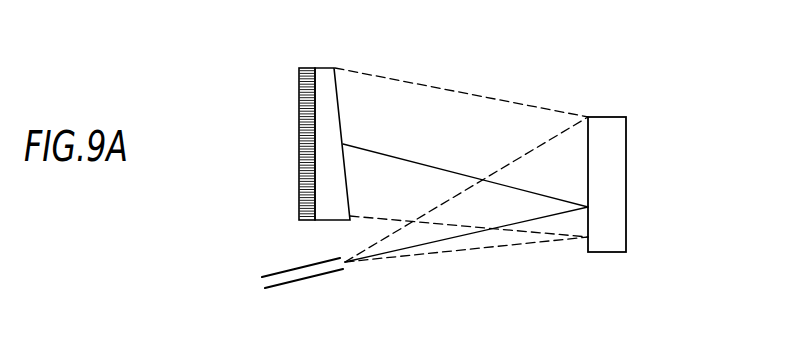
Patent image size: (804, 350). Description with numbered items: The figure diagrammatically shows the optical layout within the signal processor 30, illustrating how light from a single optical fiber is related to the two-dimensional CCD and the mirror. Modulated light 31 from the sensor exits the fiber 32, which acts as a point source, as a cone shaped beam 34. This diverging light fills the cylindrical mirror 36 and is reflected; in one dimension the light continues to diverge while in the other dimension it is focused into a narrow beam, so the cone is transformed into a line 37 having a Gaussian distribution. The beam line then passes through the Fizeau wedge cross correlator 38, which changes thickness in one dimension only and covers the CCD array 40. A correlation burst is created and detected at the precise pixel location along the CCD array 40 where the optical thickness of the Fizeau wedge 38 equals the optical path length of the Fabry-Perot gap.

The signal processor 30 is at (242, 110).
The modulated light 31 is at (432, 243).
The fiber 32 is at (285, 270).
The cone shaped beam 34 is at (465, 238).
The mirror 36 is at (627, 199).
The line 37 is at (442, 170).
The Fizeau wedge cross correlator 38 is at (327, 68).
The CCD array 40 is at (312, 67).